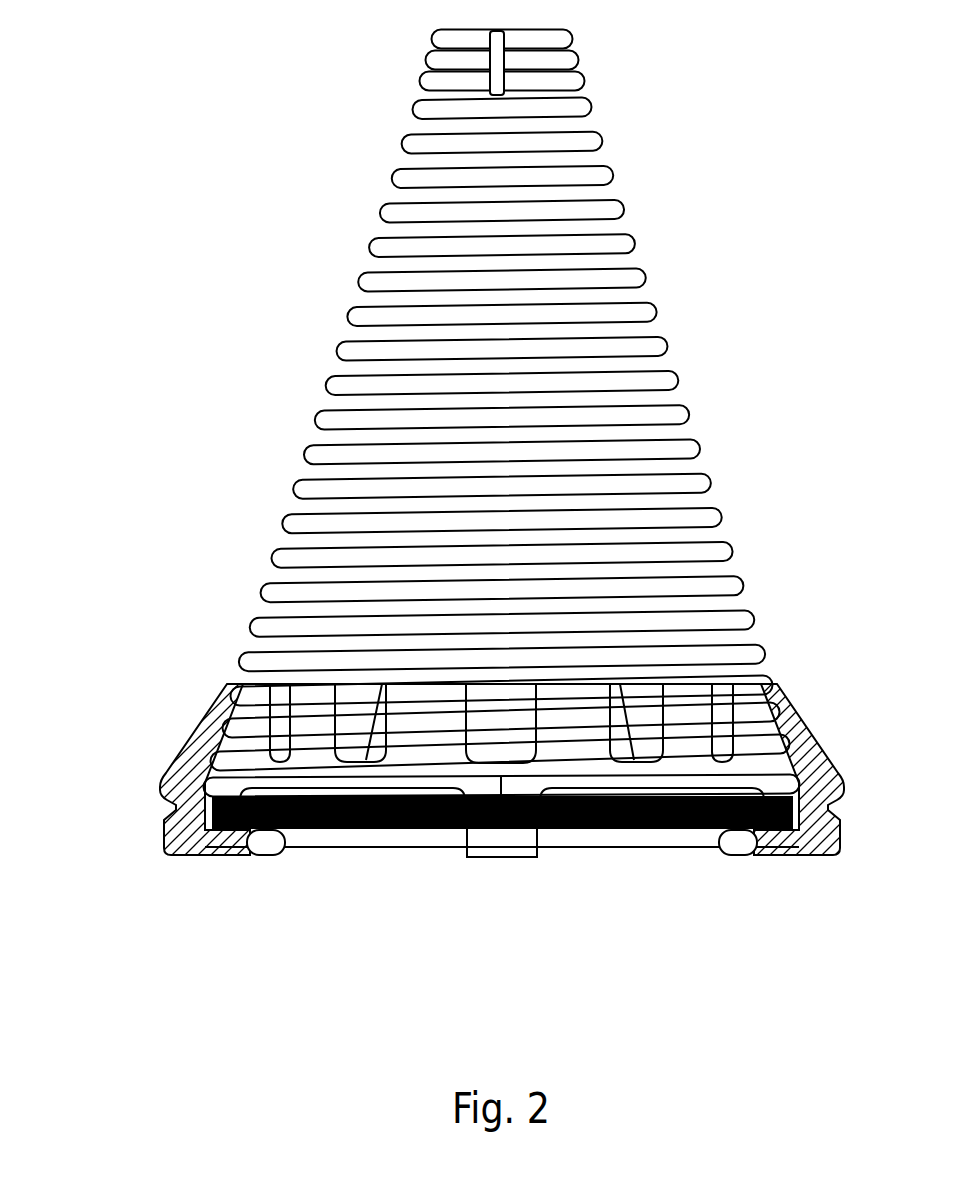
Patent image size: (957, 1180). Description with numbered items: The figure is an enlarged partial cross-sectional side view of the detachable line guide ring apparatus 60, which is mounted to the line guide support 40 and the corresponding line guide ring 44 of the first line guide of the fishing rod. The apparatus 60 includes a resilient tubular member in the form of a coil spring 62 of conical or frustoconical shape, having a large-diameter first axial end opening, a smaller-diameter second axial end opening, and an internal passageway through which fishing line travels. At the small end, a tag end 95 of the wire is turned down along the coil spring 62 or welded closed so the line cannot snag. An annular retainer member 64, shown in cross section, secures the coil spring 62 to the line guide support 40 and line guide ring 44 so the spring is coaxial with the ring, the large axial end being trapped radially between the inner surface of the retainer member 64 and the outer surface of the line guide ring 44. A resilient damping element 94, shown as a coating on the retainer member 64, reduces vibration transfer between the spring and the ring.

The detachable line guide ring apparatus 60 is at (487, 409).
The coil spring 62 is at (353, 318).
The tag end 95 is at (493, 55).
The annular retainer member 64 is at (193, 727).
The line guide ring 44 is at (358, 840).
The line guide support 40 is at (612, 830).
The resilient damping element 94 is at (770, 838).